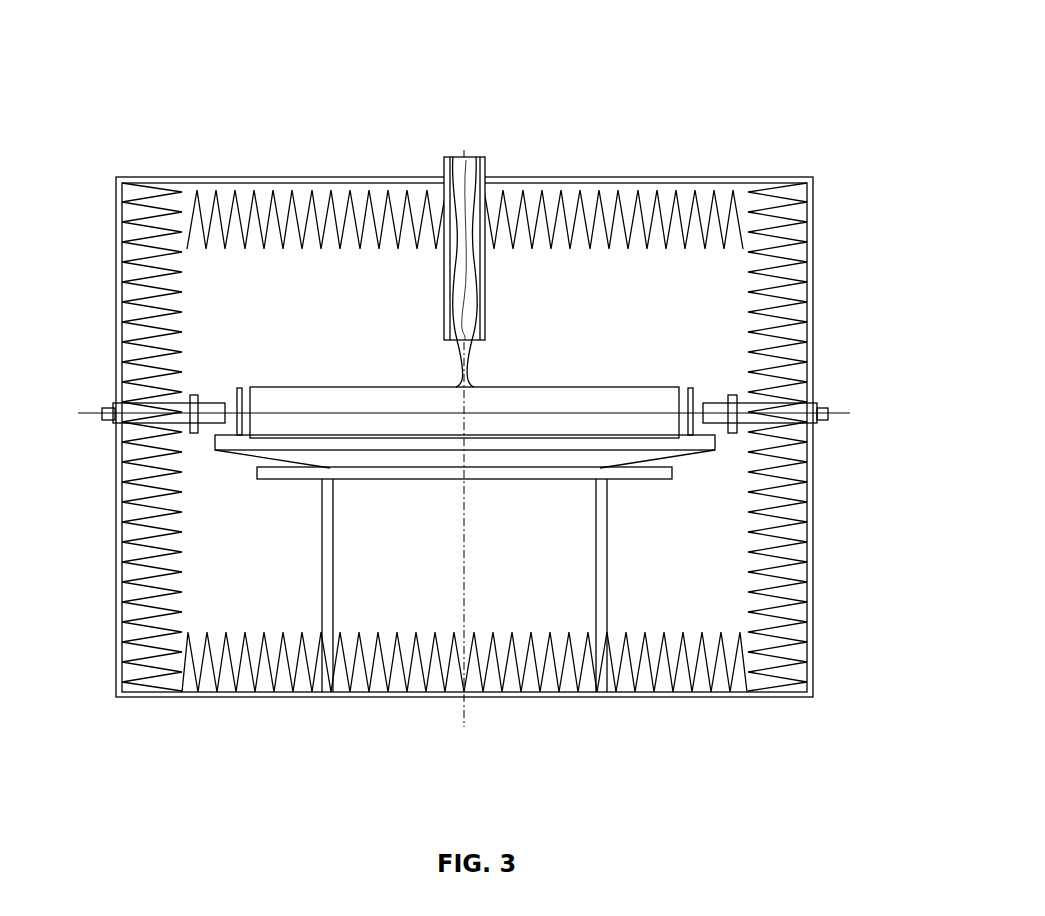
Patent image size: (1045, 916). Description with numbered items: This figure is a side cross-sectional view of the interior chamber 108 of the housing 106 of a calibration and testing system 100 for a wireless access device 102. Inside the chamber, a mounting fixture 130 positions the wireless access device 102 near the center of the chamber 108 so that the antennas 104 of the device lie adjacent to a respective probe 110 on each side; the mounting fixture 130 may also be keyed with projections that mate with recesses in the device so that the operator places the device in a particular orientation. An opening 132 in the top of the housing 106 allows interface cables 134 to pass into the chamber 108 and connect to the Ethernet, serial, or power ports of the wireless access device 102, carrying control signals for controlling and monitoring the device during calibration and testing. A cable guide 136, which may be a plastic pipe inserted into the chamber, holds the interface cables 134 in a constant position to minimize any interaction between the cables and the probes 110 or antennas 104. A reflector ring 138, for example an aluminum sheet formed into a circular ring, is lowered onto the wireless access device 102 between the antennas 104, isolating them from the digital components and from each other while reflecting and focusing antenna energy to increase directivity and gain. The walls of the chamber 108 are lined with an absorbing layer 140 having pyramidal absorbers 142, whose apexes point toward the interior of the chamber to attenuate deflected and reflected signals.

The calibration and testing system 100 is at (286, 57).
The wireless access device 102 is at (527, 447).
The antennas 104 is at (695, 399).
The housing 106 is at (302, 170).
The chamber 108 is at (400, 552).
The probe 110 is at (732, 404).
The mounting fixture 130 is at (612, 483).
The opening 132 is at (463, 196).
The interface cables 134 is at (467, 371).
The cable guide 136 is at (444, 170).
The reflector ring 138 is at (646, 412).
The absorbing layer 140 is at (465, 375).
The pyramidal absorbers 142 is at (664, 213).